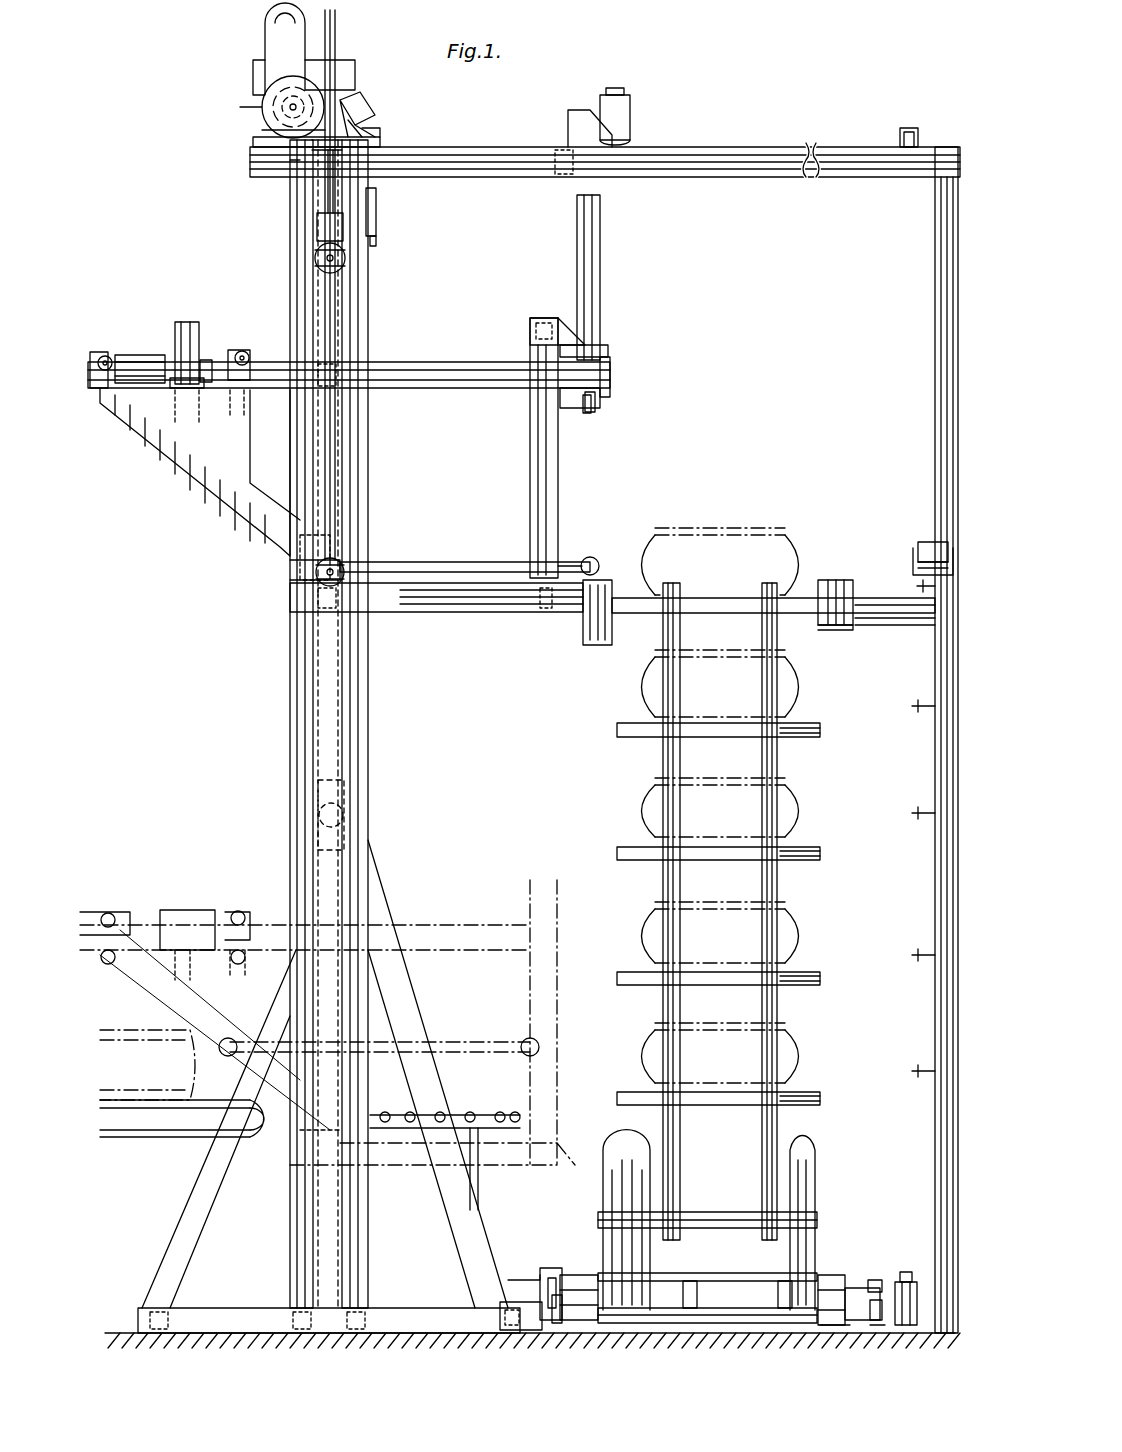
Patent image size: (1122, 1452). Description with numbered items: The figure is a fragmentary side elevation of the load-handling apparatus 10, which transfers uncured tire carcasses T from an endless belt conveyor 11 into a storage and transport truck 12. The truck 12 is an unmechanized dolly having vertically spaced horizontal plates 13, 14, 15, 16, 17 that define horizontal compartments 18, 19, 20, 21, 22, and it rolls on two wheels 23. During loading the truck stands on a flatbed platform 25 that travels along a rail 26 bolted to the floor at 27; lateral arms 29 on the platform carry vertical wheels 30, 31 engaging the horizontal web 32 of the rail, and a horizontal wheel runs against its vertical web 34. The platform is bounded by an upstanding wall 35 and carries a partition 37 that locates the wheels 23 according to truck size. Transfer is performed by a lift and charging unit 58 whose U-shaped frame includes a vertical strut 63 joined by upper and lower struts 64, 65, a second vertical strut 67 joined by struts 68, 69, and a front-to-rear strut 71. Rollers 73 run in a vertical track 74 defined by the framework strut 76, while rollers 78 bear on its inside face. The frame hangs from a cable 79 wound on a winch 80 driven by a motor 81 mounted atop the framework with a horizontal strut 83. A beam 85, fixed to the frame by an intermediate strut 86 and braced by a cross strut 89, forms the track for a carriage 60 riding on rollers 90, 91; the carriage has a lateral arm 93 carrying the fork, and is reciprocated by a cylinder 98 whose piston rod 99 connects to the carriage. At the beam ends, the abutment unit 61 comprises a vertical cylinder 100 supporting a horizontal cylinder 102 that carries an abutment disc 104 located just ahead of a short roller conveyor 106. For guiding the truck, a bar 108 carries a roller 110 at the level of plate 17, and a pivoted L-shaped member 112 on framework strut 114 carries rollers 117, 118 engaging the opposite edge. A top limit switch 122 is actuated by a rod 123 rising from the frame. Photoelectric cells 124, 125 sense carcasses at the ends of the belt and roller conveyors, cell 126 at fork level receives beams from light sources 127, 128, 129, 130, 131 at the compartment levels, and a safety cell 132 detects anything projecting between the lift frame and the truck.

The load-handling apparatus 10 is at (856, 122).
The endless belt conveyor 11 is at (150, 1137).
The storage and/or transport truck 12 is at (830, 1040).
The horizontal plate 13 is at (820, 1098).
The horizontal plate 14 is at (820, 978).
The horizontal plate 15 is at (820, 853).
The horizontal plate 16 is at (820, 730).
The horizontal plate 17 is at (700, 602).
The horizontal compartment 18 is at (755, 1002).
The horizontal compartment 19 is at (750, 883).
The horizontal compartment 20 is at (750, 758).
The horizontal compartment 21 is at (755, 640).
The horizontal compartment 22 is at (810, 575).
The wheels 23 is at (815, 1142).
The flatbed carriage or platform 25 is at (745, 1305).
The rail 26 is at (910, 1280).
The bolted floor attachment 27 is at (868, 1310).
The lateral rigid arms 29 is at (848, 1280).
The vertical wheel 30 is at (548, 1268).
The vertical wheel 31 is at (562, 1312).
The horizontal web 32 is at (553, 1280).
The vertical web 34 is at (500, 1316).
The upstanding wall 35 is at (722, 1290).
The partition 37 is at (690, 1285).
The lift and charging unit 58 is at (239, 269).
The carriage 60 is at (225, 345).
The abutment unit 61 is at (629, 352).
The vertical strut 63 is at (558, 485).
The upper horizontal strut 64 is at (530, 360).
The lower horizontal strut 65 is at (546, 612).
The vertical strut 67 is at (370, 305).
The upper horizontal strut 68 is at (317, 225).
The lower horizontal strut 69 is at (318, 605).
The horizontal front to rear strut 71 is at (435, 612).
The roller 73 is at (345, 262).
The vertical track 74 is at (344, 745).
The vertical strut 76 is at (290, 705).
The roller 78 is at (290, 283).
The cable 79 is at (328, 200).
The winch 80 is at (337, 42).
The motor 81 is at (262, 105).
The horizontal strut 83 is at (380, 137).
The horizontal beam 85 is at (440, 385).
The intermediate horizontal strut 86 is at (336, 388).
The horizontal cross strut 89 is at (187, 322).
The roller or wheel 90 is at (250, 352).
The roller or wheel 91 is at (107, 352).
The lateral arm 93 is at (175, 470).
The cylinder 98 is at (137, 352).
The piston rod 99 is at (208, 380).
The vertical double-acting cylinder 100 is at (600, 250).
The horizontal double-acting cylinder 102 is at (583, 411).
The abutment disc 104 is at (610, 397).
The roller conveyor 106 is at (460, 1113).
The horizontal bar 108 is at (478, 612).
The roller 110 is at (583, 640).
The L-shaped member 112 is at (880, 625).
The vertical strut 114 is at (935, 405).
The roller 117 is at (925, 545).
The roller 118 is at (832, 625).
The top limit switch 122 is at (372, 105).
The rod 123 is at (376, 205).
The photoelectric cell 124 is at (228, 1038).
The photoelectric cell 125 is at (525, 1038).
The photoelectric cell 126 is at (595, 558).
The light source 127 is at (912, 1071).
The light source 128 is at (912, 955).
The light source 129 is at (912, 813).
The light source 130 is at (912, 706).
The light source 131 is at (917, 586).
The photoelectric cell 132 is at (630, 115).
The tire carcass T is at (108, 1026).